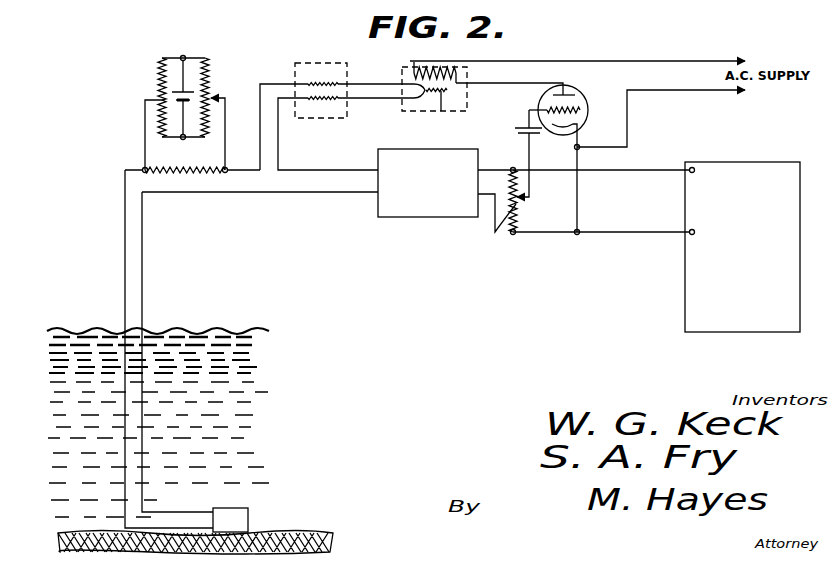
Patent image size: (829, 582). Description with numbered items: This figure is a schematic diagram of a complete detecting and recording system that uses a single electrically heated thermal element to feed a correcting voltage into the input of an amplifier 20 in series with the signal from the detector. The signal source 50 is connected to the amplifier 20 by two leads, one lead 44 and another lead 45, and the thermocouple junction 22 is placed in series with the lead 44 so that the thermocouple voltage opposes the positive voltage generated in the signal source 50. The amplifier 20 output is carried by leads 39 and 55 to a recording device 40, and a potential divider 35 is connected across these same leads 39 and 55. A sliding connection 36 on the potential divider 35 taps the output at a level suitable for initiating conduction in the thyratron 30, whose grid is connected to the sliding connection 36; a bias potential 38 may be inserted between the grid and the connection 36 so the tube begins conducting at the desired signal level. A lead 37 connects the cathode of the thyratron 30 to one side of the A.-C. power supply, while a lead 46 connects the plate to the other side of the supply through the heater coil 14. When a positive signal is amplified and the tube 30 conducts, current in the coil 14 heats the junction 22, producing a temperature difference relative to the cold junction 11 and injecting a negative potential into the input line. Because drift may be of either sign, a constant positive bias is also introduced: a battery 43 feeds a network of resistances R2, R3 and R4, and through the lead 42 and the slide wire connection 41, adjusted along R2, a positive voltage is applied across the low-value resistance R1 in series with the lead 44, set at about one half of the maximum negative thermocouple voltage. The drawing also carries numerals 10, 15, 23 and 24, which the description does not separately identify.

The resistance R1 is at (191, 168).
The resistance R2 is at (211, 75).
The resistance R3 is at (158, 72).
The resistance R4 is at (158, 120).
The battery 43 is at (172, 93).
The lead 42 is at (145, 143).
The slide wire connection 41 is at (225, 124).
The lead 44 is at (125, 258).
The lead 45 is at (143, 258).
The signal source 50 is at (237, 517).
The cold junction 11 is at (294, 62).
The thermocouple wire 23 is at (378, 83).
The thermocouple wire 24 is at (375, 100).
The thermocouple hot junction unit 10 is at (468, 98).
The thermocouple junction 22 is at (438, 112).
The heater coil 14 is at (438, 72).
The A.C. supply lead 15 is at (637, 60).
The lead 46 is at (500, 83).
The thyratron 30 is at (584, 88).
The bias potential 38 is at (526, 134).
The lead 37 is at (583, 149).
The amplifier 20 is at (423, 219).
The output lead 39 is at (650, 169).
The sliding connection 36 is at (522, 201).
The potential divider 35 is at (497, 226).
The output lead 55 is at (650, 233).
The recording device 40 is at (747, 160).